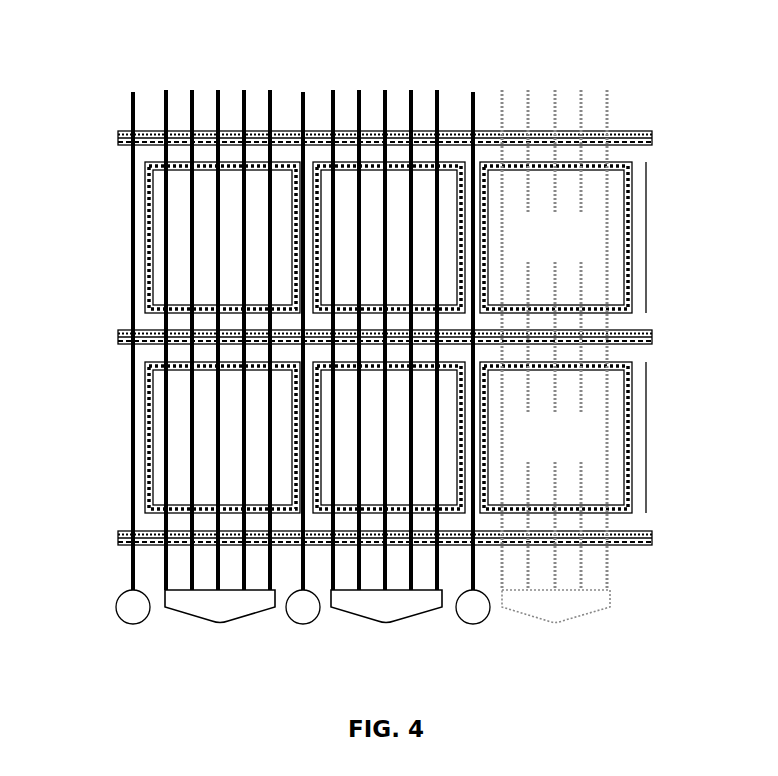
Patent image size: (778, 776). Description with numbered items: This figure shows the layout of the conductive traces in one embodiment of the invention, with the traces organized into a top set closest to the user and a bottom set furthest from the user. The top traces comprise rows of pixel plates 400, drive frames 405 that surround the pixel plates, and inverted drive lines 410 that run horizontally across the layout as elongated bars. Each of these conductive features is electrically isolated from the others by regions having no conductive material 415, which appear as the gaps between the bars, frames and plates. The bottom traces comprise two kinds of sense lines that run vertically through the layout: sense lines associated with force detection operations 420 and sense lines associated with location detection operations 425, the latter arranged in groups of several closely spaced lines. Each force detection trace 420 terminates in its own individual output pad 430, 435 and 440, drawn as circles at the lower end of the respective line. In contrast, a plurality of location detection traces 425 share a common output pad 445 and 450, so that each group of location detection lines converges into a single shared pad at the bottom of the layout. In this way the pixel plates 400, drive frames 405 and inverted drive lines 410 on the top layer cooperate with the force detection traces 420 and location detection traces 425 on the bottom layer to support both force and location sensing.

The pixel plates 400 is at (538, 248).
The drive frames 405 is at (646, 237).
The inverted drive lines 410 is at (422, 325).
The regions having no conductive material 415 is at (127, 131).
The force detection traces 420 is at (293, 308).
The location detection traces 425 is at (382, 321).
The output pad 430 is at (133, 624).
The output pad 435 is at (303, 624).
The output pad 440 is at (473, 624).
The common output pad 445 is at (203, 615).
The common output pad 450 is at (369, 615).